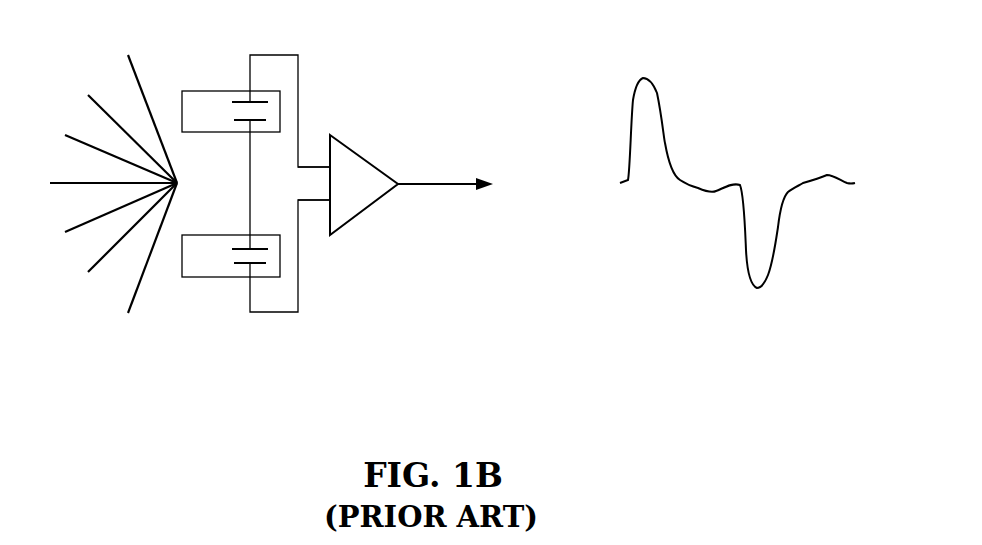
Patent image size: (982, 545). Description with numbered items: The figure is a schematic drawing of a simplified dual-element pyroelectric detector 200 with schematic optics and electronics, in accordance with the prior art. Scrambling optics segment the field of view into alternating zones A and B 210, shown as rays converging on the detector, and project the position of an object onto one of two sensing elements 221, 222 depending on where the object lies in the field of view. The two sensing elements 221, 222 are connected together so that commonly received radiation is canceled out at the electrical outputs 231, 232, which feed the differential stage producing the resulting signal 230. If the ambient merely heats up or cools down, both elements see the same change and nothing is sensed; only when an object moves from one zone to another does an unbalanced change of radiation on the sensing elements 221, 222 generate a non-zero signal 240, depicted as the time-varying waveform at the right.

The prior art differential measurement circuit 200 is at (377, 221).
The zone 210 is at (115, 320).
The sensing element 221 is at (204, 90).
The sensing element 222 is at (202, 268).
The resulting signal 230 is at (454, 185).
The electrical output 231 is at (306, 163).
The electrical output 232 is at (306, 203).
The signal 240 is at (735, 321).